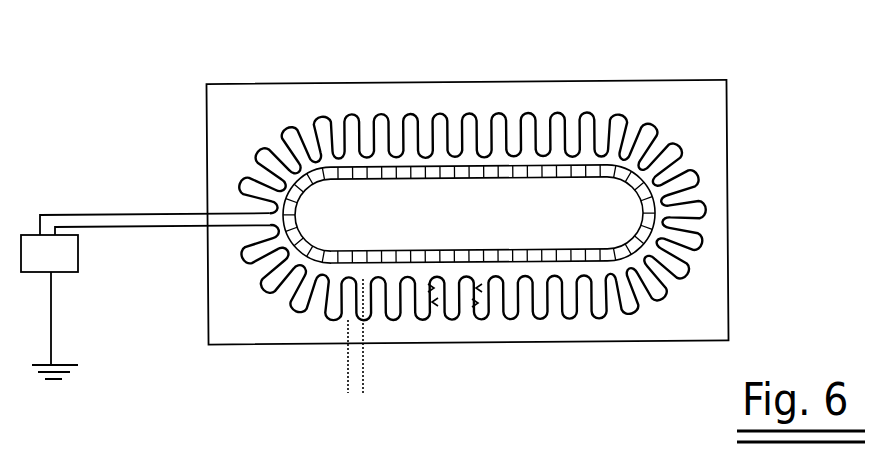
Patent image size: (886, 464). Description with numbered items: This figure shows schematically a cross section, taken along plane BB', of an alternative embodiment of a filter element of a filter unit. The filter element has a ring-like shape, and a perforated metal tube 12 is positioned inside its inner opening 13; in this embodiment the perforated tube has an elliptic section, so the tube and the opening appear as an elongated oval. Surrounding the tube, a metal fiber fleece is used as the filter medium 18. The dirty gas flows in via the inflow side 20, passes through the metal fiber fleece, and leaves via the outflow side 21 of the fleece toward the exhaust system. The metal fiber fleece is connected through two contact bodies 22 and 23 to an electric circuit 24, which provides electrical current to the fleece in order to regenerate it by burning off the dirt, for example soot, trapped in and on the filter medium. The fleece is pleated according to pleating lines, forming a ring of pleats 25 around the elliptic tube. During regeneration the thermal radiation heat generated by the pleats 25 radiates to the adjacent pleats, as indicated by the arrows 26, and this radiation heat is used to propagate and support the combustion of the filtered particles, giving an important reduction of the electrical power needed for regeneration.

The perforated metal tube 12 is at (469, 214).
The inner opening 13 is at (469, 136).
The filter medium 18 is at (508, 212).
The inflow side 20 is at (484, 161).
The outflow side 21 is at (533, 195).
The contact body 22 is at (155, 158).
The contact body 23 is at (162, 279).
The electric circuit 24 is at (60, 203).
The pleats 25 is at (356, 363).
The arrows 26 is at (466, 351).